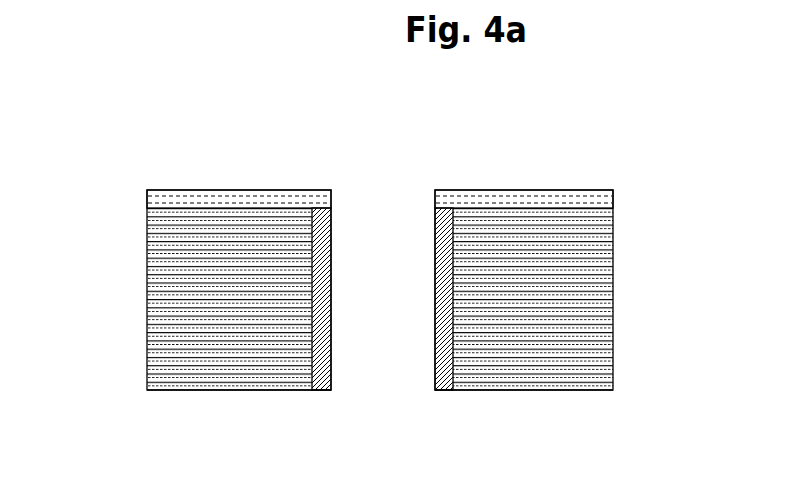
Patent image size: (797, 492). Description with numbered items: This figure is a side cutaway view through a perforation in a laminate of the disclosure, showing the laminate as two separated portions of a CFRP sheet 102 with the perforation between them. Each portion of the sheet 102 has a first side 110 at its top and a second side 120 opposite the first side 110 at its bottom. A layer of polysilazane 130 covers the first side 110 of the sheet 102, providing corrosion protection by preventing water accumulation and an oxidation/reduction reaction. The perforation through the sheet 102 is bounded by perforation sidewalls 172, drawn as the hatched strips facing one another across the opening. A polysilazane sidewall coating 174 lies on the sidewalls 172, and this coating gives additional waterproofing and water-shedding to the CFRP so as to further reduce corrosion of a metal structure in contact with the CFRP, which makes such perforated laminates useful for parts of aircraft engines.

The CFRP sheet 102 is at (187, 280).
The first side 110 is at (200, 190).
The second side 120 is at (158, 390).
The layer of polysilazane 130 is at (437, 199).
The perforation sidewalls 172 is at (457, 352).
The polysilazane sidewall coating 174 is at (437, 254).